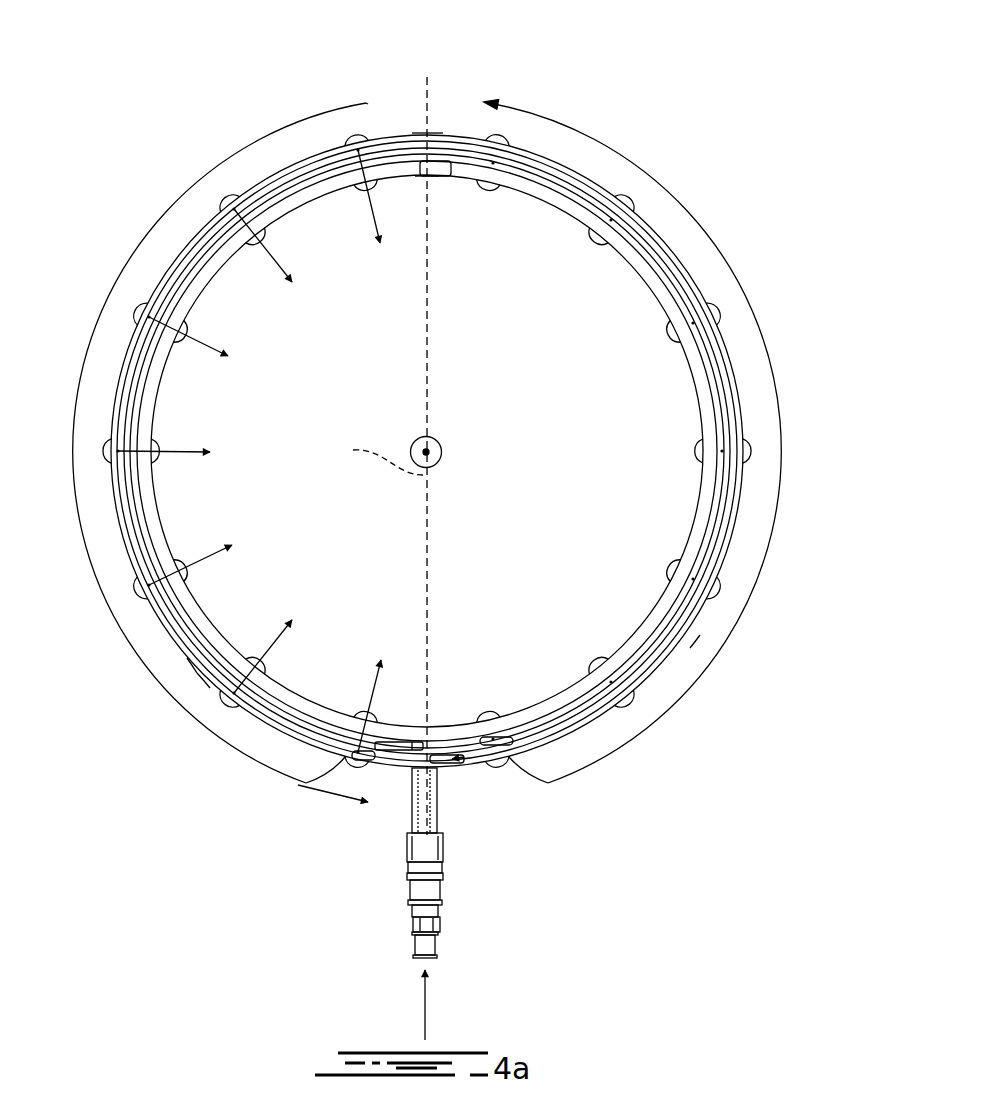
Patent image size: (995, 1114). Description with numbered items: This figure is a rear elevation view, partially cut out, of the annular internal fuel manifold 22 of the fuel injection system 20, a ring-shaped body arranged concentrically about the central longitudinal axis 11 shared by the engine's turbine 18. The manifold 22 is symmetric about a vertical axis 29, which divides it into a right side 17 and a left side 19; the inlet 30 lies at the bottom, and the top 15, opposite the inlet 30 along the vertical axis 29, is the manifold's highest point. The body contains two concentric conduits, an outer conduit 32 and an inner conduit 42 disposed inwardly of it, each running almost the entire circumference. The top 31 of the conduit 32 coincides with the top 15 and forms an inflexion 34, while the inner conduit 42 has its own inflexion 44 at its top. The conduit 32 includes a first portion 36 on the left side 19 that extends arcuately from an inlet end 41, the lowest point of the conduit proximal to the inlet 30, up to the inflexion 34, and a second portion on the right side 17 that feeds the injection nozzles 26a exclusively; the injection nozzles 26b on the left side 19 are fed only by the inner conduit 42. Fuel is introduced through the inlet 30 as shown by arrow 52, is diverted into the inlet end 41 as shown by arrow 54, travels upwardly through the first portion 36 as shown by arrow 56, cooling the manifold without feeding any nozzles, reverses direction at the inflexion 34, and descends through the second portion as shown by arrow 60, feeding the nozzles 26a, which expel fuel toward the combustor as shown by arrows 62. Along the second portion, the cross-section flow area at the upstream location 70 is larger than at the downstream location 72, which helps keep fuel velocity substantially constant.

The central longitudinal axis 11 is at (427, 452).
The top 15 is at (427, 133).
The right side 17 is at (187, 658).
The turbine 18 is at (160, 620).
The left side 19 is at (743, 410).
The fuel injection system 20 is at (635, 100).
The fuel manifold 22 is at (110, 397).
The injection nozzles 26a is at (356, 140).
The injection nozzles 26b is at (497, 137).
The vertical axis 29 is at (376, 457).
The inlet 30 is at (428, 890).
The top of conduit 31 is at (425, 137).
The conduit 32 is at (730, 385).
The inflexion 34 is at (420, 142).
The first portion 36 is at (690, 648).
The inlet end 41 is at (432, 162).
The conduit 42 is at (145, 360).
The inflexion 44 is at (424, 163).
The arrow 52 is at (427, 998).
The arrow 54 is at (455, 765).
The arrow 56 is at (767, 340).
The arrow 60 is at (177, 707).
The arrows 62 is at (215, 352).
The location 70 is at (268, 175).
The location 72 is at (197, 673).